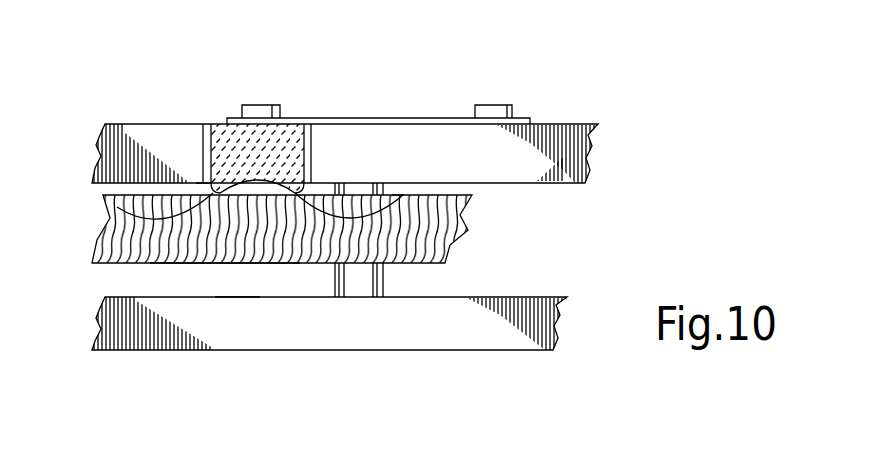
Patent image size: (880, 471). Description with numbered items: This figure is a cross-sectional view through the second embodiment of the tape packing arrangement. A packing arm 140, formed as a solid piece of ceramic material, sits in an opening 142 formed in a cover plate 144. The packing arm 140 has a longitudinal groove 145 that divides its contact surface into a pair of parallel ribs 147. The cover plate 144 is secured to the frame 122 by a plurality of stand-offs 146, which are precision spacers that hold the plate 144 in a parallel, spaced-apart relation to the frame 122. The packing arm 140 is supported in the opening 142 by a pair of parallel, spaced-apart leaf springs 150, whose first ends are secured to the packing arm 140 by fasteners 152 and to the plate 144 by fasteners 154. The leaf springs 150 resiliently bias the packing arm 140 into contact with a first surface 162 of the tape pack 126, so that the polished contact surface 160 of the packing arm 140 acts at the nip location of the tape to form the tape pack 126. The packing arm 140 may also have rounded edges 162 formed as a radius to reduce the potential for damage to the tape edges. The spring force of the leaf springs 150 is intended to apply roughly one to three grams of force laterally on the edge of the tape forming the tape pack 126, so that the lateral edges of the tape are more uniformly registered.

The frame 122 is at (487, 313).
The tape pack 126 is at (247, 263).
The packing arm 140 is at (235, 150).
The opening 142 is at (315, 158).
The cover plate 144 is at (148, 140).
The longitudinal groove 145 is at (223, 263).
The stand-offs 146 is at (348, 283).
The parallel ribs 147 is at (291, 192).
The leaf springs 150 is at (423, 125).
The fasteners 152 is at (262, 104).
The fasteners 154 is at (510, 104).
The polished contact surface 160 is at (258, 196).
The first surface 162 is at (203, 183).